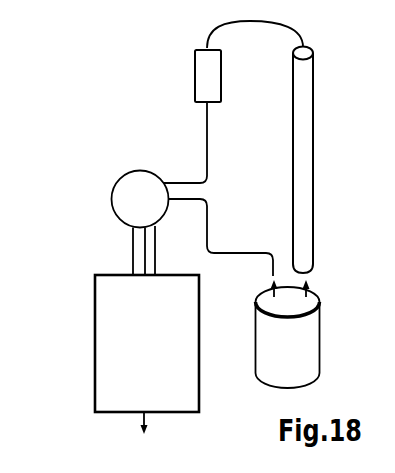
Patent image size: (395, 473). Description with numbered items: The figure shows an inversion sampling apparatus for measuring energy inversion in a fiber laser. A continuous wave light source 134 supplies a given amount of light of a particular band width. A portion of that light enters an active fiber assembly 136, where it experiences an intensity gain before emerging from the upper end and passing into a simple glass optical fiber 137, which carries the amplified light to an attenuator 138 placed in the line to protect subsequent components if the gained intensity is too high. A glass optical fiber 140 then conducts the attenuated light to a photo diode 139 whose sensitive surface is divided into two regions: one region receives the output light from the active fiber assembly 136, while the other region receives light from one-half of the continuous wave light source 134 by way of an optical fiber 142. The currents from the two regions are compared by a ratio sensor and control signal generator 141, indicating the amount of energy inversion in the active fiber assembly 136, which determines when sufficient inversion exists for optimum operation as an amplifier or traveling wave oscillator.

The continuous wave light source 134 is at (307, 342).
The active fiber assembly 136 is at (308, 232).
The glass optical fiber 137 is at (288, 25).
The attenuator 138 is at (197, 73).
The photo diode 139 is at (118, 203).
The glass optical fiber 140 is at (207, 150).
The ratio sensor and control signal generator 141 is at (97, 330).
The optical fiber 142 is at (233, 253).